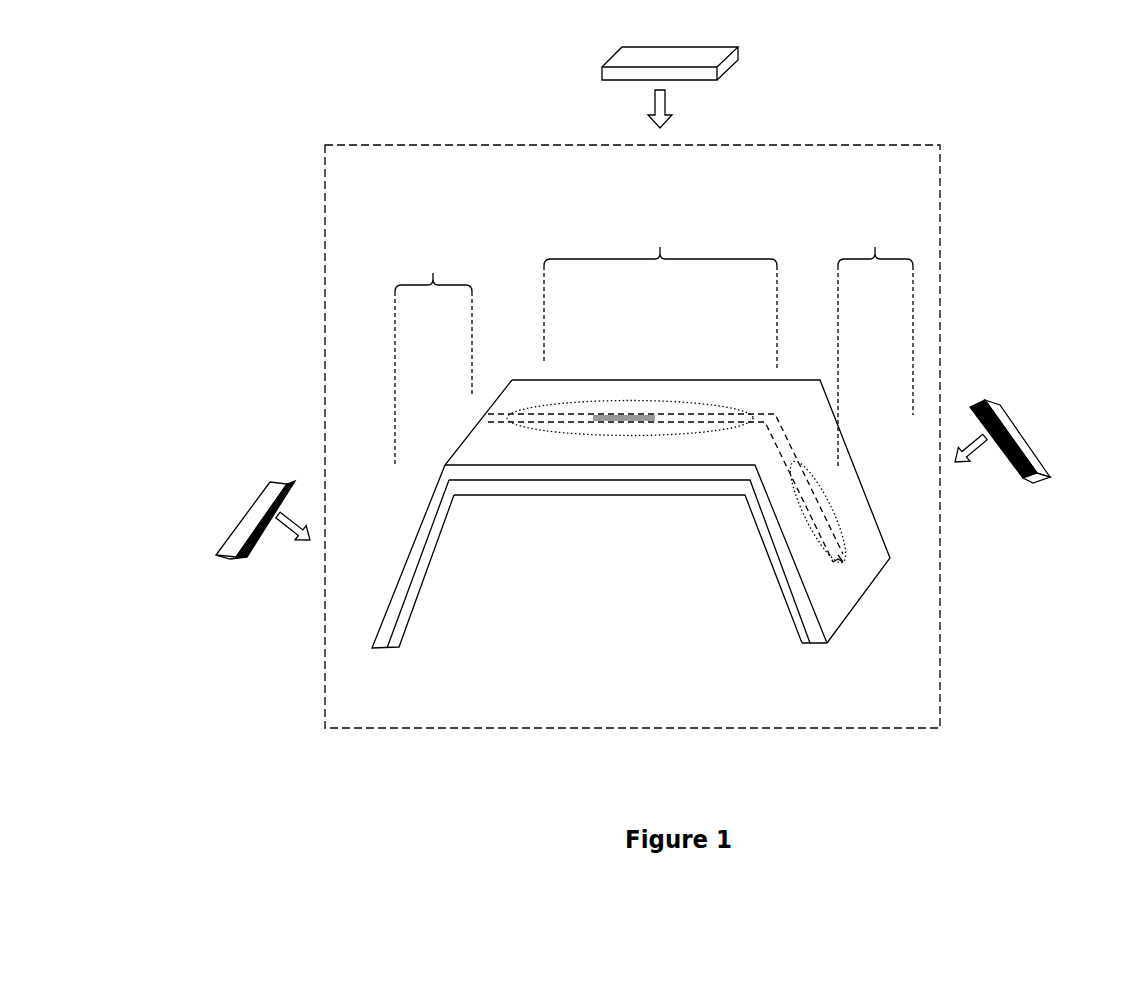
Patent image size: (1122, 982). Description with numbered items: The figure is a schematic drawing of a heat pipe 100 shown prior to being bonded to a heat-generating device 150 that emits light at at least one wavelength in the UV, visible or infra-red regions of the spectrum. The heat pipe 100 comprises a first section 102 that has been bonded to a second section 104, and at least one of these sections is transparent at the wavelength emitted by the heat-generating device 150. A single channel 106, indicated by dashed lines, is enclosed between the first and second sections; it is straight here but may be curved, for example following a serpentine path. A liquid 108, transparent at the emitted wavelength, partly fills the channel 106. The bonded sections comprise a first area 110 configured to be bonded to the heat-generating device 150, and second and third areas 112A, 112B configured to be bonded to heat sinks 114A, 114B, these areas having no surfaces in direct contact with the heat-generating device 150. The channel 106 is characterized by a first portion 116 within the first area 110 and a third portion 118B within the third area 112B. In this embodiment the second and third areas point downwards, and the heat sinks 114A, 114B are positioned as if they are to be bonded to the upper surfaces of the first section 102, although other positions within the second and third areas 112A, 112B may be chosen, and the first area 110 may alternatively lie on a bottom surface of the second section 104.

The heat pipe 100 is at (940, 145).
The first section 102 is at (668, 470).
The second section 104 is at (415, 593).
The channel 106 is at (543, 415).
The liquid 108 is at (643, 420).
The first area 110 is at (660, 286).
The second area 112A is at (439, 347).
The third area 112B is at (886, 341).
The heat sink 114A is at (263, 500).
The heat sink 114B is at (1017, 440).
The first portion 116 is at (592, 435).
The third portion 118B is at (847, 537).
The heat-generating device 150 is at (710, 62).